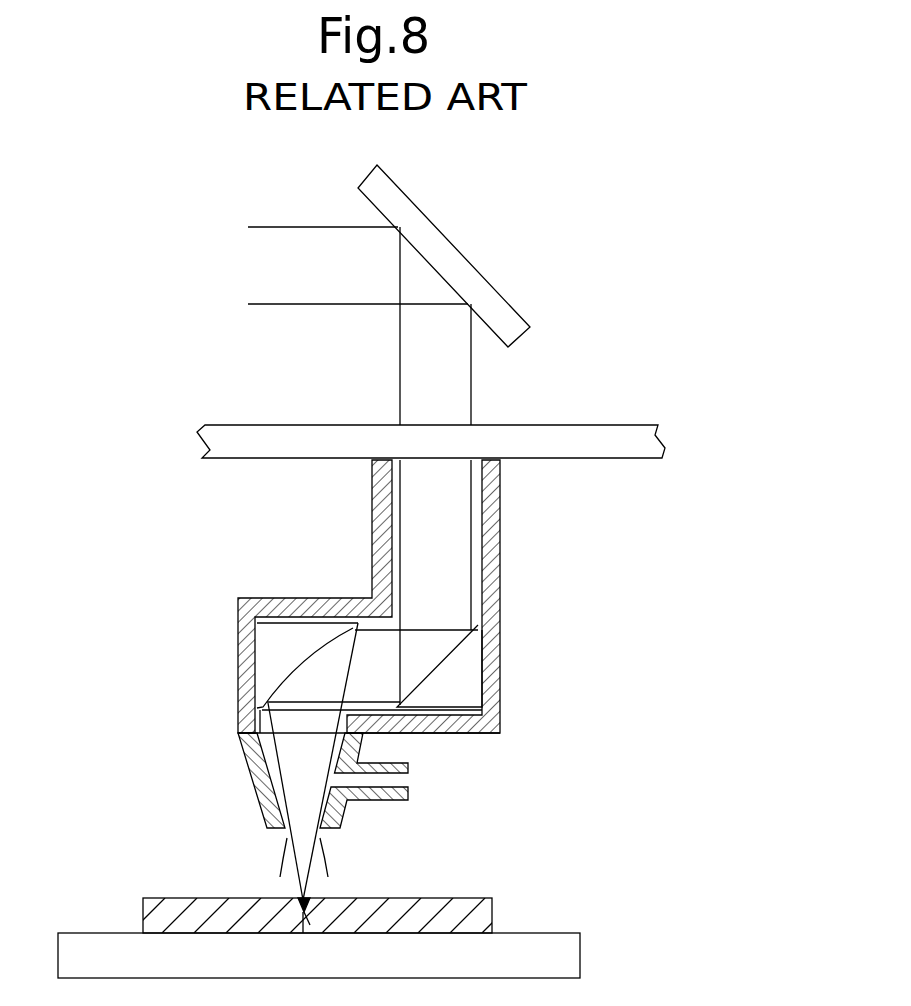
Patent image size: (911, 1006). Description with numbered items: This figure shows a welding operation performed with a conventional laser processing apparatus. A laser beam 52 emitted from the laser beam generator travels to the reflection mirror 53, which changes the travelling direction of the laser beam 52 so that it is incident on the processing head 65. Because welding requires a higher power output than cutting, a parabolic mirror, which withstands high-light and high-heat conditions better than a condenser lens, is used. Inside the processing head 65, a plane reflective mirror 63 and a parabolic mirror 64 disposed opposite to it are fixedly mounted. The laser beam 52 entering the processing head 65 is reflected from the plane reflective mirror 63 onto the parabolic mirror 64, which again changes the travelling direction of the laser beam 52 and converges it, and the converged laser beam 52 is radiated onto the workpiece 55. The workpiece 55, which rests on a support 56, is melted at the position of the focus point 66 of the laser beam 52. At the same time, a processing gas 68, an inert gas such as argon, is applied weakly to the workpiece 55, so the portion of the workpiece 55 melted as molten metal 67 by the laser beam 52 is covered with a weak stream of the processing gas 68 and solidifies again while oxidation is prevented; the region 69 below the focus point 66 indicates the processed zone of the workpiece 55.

The laser beam 52 is at (398, 390).
The reflection mirror 53 is at (455, 268).
The workpiece 55 is at (475, 920).
The work table 56 is at (582, 943).
The plane reflective mirror 63 is at (432, 698).
The parabolic mirror 64 is at (283, 638).
The processing head 65 is at (493, 602).
The focus point 66 is at (297, 900).
The molten metal 67 is at (293, 913).
The processing gas 68 is at (285, 863).
The kerf 69 is at (310, 910).